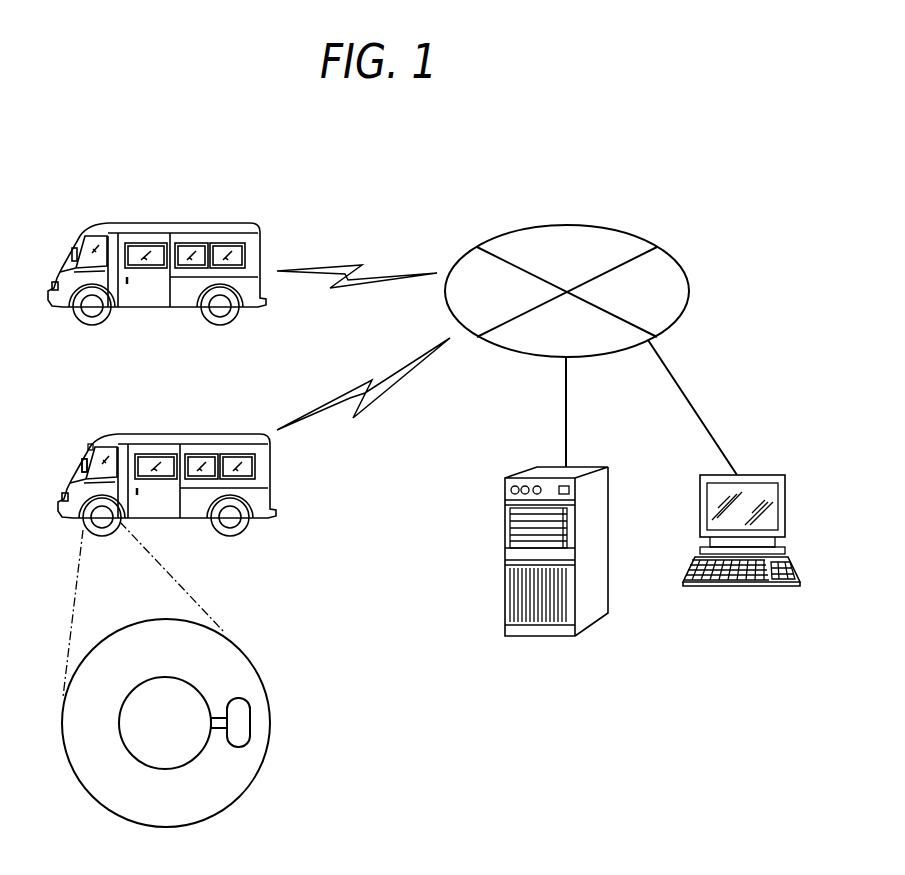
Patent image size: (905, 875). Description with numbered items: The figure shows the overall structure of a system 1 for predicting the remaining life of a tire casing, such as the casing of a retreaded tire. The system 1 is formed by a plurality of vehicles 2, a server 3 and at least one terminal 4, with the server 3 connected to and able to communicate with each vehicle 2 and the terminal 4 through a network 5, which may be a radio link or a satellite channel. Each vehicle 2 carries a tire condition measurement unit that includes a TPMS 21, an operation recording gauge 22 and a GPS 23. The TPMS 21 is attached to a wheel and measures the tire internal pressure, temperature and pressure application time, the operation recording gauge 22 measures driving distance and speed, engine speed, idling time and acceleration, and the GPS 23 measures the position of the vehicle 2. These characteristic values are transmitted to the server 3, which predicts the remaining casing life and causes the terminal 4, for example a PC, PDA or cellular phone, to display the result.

The system for predicting remaining tire casing life 1 is at (410, 197).
The vehicle 2 is at (163, 222).
The server 3 is at (560, 638).
The terminal 4 is at (743, 587).
The network 5 is at (618, 232).
The TPMS 21 is at (240, 720).
The operation recording gauge 22 is at (82, 460).
The GPS 23 is at (90, 446).